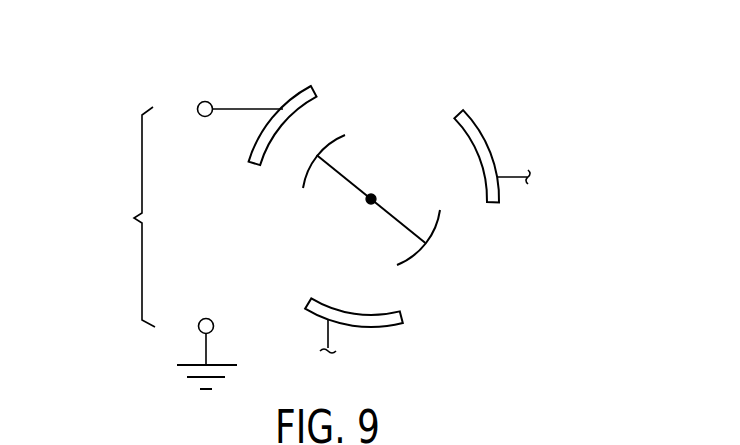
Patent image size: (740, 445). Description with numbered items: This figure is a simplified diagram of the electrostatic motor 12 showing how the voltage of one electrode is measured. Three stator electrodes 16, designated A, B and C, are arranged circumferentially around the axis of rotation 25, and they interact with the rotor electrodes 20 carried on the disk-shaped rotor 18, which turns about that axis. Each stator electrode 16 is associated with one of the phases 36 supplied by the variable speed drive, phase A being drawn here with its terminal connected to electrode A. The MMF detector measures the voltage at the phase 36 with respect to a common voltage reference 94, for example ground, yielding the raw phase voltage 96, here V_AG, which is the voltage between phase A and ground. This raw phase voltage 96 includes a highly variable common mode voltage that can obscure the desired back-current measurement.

The electrostatic motor 12 is at (538, 97).
The stator electrodes 16 is at (313, 88).
The rotor 18 is at (363, 183).
The rotor electrodes 20 is at (437, 230).
The axis of rotation 25 is at (375, 195).
The phase 36 is at (247, 108).
The common voltage reference 94 is at (206, 347).
The raw phase voltage 96 is at (133, 218).